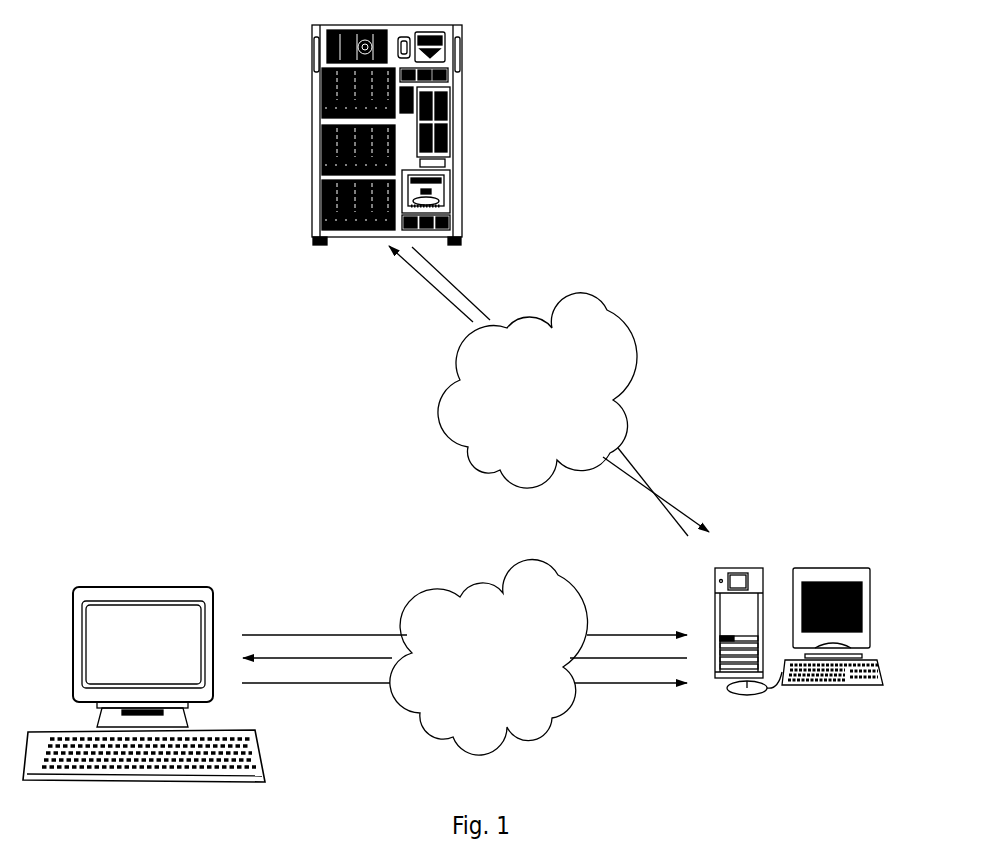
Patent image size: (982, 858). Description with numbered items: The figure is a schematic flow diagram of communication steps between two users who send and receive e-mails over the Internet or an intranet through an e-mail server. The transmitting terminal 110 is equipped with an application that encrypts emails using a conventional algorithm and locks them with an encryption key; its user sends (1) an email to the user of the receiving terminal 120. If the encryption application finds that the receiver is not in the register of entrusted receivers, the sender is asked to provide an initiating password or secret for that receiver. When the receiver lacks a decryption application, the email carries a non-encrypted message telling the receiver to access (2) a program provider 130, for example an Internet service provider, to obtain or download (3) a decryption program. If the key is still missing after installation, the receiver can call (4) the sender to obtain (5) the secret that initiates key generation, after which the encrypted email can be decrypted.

The transmitting terminal 110 is at (144, 684).
The receiving terminal 120 is at (833, 572).
The program provider 130 is at (460, 162).
The sending of email 1 is at (464, 625).
The accessing program provider 2 is at (439, 284).
The obtaining decryption program 3 is at (656, 492).
The calling the sender 4 is at (465, 648).
The obtaining the secret 5 is at (464, 693).